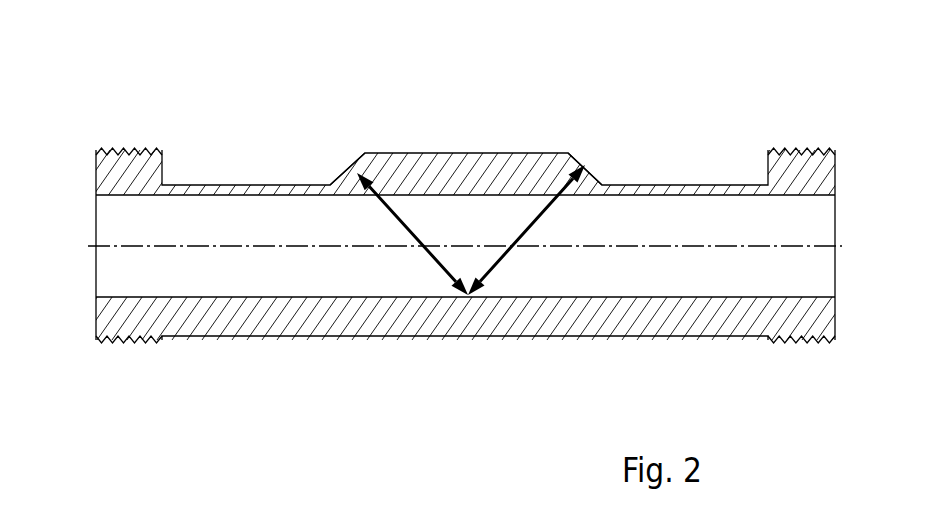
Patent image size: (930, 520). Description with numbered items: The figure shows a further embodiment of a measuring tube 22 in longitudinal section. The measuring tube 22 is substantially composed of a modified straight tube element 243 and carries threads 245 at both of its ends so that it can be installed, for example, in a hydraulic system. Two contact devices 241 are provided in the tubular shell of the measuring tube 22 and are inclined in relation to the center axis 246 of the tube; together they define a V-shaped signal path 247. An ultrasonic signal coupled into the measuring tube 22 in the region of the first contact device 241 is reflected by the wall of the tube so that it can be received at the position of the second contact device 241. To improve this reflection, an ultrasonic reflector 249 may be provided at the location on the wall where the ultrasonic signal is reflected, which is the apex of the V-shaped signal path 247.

The measuring tube 22 is at (490, 72).
The contact devices 241 is at (342, 172).
The modified straight tube element 243 is at (107, 227).
The threads 245 is at (790, 147).
The center axis 246 is at (117, 248).
The V-shaped signal path 247 is at (512, 257).
The ultrasonic reflector 249 is at (468, 297).